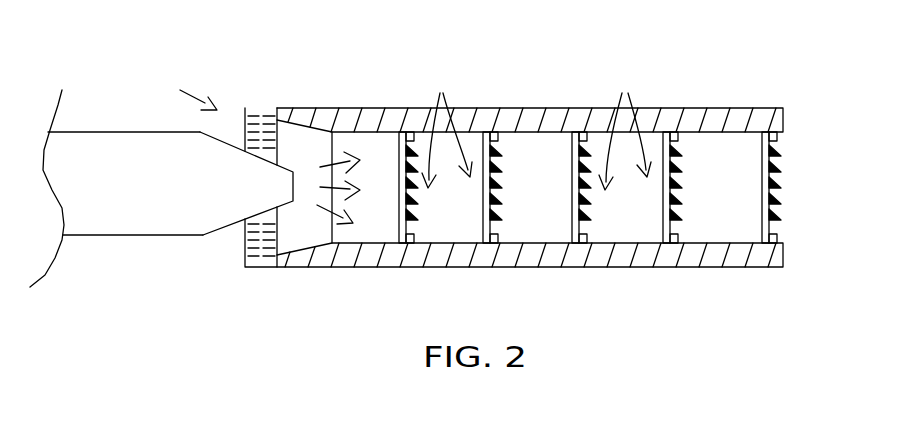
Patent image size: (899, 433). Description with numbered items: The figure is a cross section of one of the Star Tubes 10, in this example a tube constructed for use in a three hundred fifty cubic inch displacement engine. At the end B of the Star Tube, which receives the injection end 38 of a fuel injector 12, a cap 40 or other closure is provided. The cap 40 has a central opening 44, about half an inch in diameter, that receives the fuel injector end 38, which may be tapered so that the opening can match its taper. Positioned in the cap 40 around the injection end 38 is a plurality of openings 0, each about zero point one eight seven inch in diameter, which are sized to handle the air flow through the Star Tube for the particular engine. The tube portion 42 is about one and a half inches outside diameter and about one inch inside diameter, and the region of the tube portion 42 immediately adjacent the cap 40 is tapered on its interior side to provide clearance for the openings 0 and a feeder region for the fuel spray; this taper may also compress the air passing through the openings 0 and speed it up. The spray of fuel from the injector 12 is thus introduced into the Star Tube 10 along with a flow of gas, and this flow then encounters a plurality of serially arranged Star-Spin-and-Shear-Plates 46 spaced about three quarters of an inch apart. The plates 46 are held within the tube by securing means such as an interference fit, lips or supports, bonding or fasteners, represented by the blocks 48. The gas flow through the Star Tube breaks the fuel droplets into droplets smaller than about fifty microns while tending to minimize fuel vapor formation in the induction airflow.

The Star Tube 10 is at (378, 70).
The fuel injector 12 is at (82, 237).
The injection end 38 is at (278, 198).
The cap 40 is at (234, 217).
The tube portion 42 is at (562, 109).
The central opening 44 is at (243, 220).
The Star-Spin-and-Shear-Plates 46 is at (536, 126).
The blocks 48 is at (498, 136).
The openings 0 is at (250, 107).
The end B is at (263, 72).